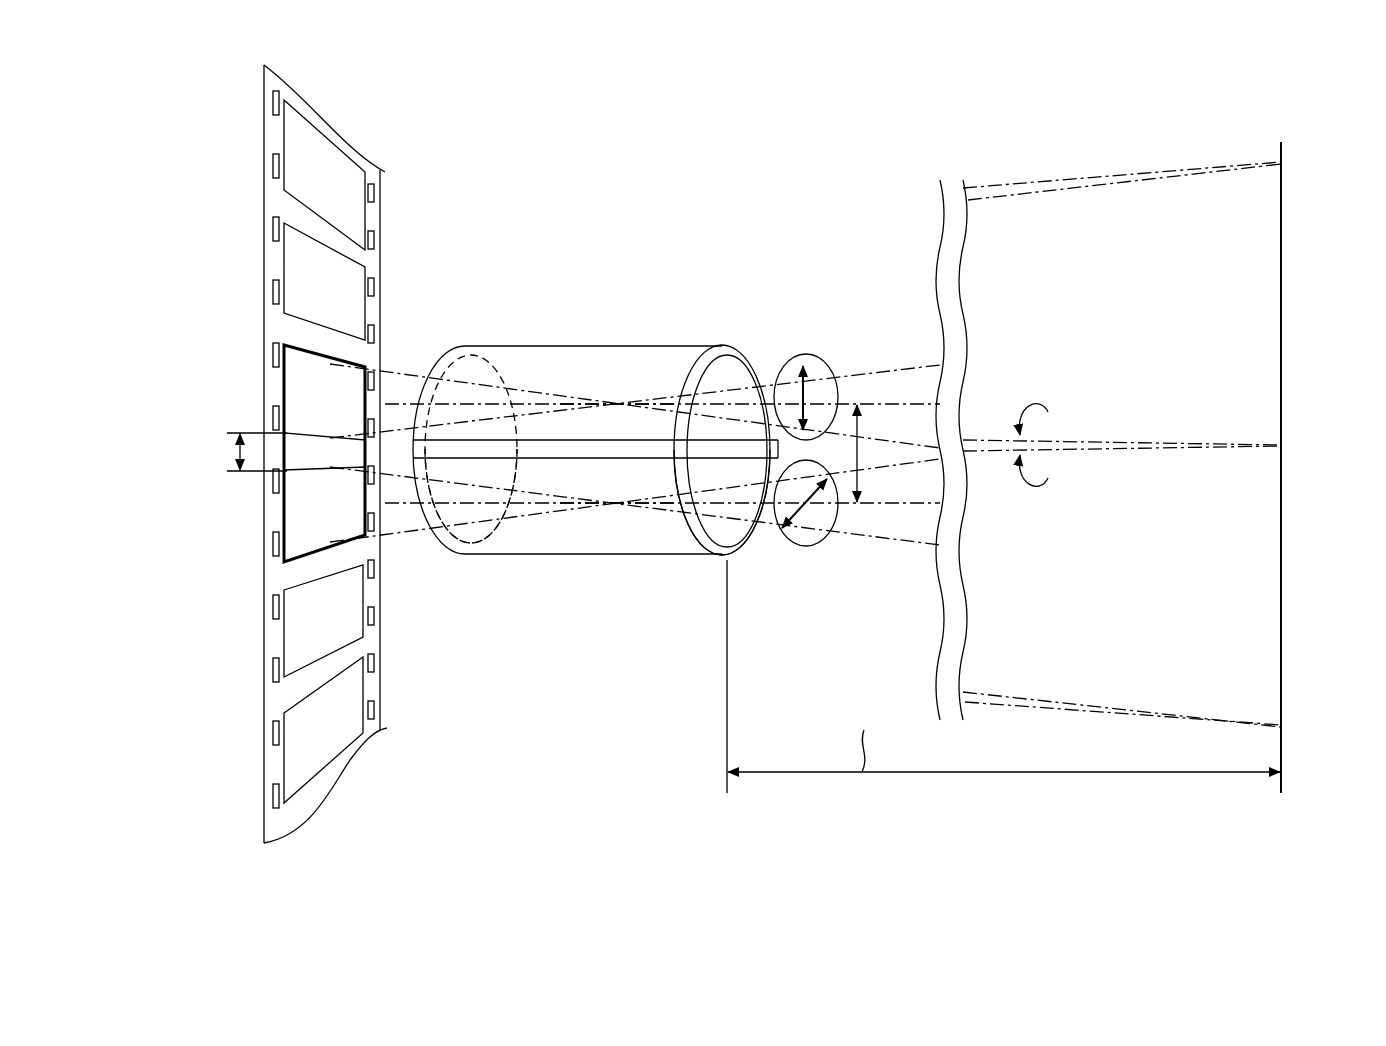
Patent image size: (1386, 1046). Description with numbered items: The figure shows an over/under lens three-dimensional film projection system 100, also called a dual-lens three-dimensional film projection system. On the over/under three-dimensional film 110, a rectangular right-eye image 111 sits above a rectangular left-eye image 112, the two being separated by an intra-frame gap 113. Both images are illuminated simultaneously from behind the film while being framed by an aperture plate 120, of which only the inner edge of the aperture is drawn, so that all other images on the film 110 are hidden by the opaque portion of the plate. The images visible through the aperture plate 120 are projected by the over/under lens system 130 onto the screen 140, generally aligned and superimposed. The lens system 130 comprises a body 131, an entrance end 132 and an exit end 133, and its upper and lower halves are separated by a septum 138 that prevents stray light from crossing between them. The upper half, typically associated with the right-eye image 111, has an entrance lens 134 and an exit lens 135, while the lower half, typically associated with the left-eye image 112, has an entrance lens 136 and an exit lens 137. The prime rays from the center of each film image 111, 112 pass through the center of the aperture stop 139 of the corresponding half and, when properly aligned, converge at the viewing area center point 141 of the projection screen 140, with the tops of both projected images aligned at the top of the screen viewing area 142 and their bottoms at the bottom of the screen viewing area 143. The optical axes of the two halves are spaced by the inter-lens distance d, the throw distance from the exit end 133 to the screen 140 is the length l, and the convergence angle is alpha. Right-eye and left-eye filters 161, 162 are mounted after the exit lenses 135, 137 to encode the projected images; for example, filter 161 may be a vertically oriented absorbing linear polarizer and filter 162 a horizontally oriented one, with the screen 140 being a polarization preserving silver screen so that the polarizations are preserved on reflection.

The over/under lens 3D film projection system 100 is at (428, 145).
The over/under 3D film 110 is at (350, 795).
The right-eye image 111 is at (285, 388).
The left-eye image 112 is at (285, 522).
The intra-frame gap 113 is at (236, 455).
The aperture plate 120 is at (298, 352).
The over/under lens system 130 is at (548, 224).
The body 131 is at (541, 345).
The entrance end 132 is at (437, 362).
The exit end 133 is at (685, 350).
The entrance lens 134 is at (468, 348).
The exit lens 135 is at (718, 355).
The entrance lens 136 is at (458, 548).
The exit lens 137 is at (705, 547).
The septum 138 is at (575, 440).
The aperture stop 139 is at (612, 400).
The projection screen 140 is at (1282, 300).
The viewing area center point 141 is at (1281, 445).
The top of the screen viewing area 142 is at (1281, 162).
The bottom of the screen viewing area 143 is at (1281, 727).
The right-eye filter 161 is at (808, 358).
The left-eye filter 162 is at (795, 548).